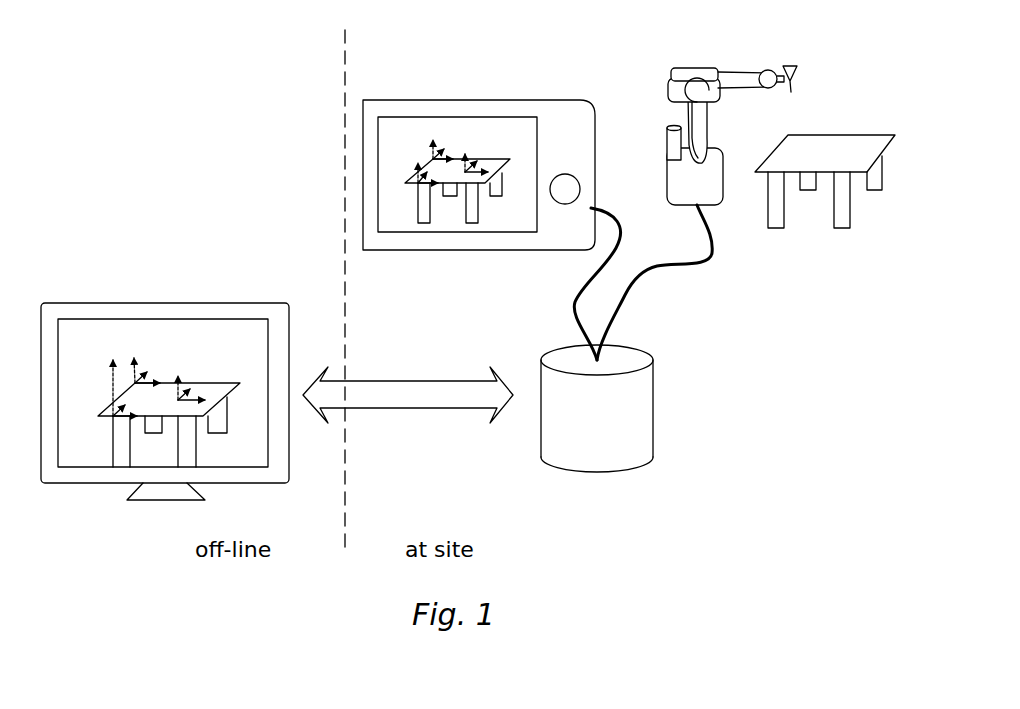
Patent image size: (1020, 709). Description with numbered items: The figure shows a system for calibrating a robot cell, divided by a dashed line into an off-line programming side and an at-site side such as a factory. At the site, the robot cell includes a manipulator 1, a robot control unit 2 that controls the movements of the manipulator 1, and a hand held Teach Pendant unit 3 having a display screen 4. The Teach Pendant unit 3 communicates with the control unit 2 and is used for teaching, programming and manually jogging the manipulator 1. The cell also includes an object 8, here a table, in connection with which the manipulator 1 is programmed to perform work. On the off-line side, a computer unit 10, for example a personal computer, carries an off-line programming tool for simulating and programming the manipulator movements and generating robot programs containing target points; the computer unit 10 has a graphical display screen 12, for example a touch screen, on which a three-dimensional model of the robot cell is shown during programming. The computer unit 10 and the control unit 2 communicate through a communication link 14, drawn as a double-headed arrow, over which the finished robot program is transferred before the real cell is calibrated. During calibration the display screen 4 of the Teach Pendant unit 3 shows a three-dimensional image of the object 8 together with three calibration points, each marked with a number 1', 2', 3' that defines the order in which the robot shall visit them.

The manipulator 1 is at (728, 110).
The robot control unit 2 is at (626, 338).
The Teach Pendant unit 3 is at (492, 195).
The display screen 4 is at (497, 127).
The object 8 is at (842, 145).
The computer unit 10 is at (206, 293).
The graphical display screen 12 is at (85, 342).
The communication link 14 is at (398, 390).
The calibration point number 1' is at (444, 139).
The calibration point number 2' is at (417, 164).
The calibration point number 3' is at (477, 149).